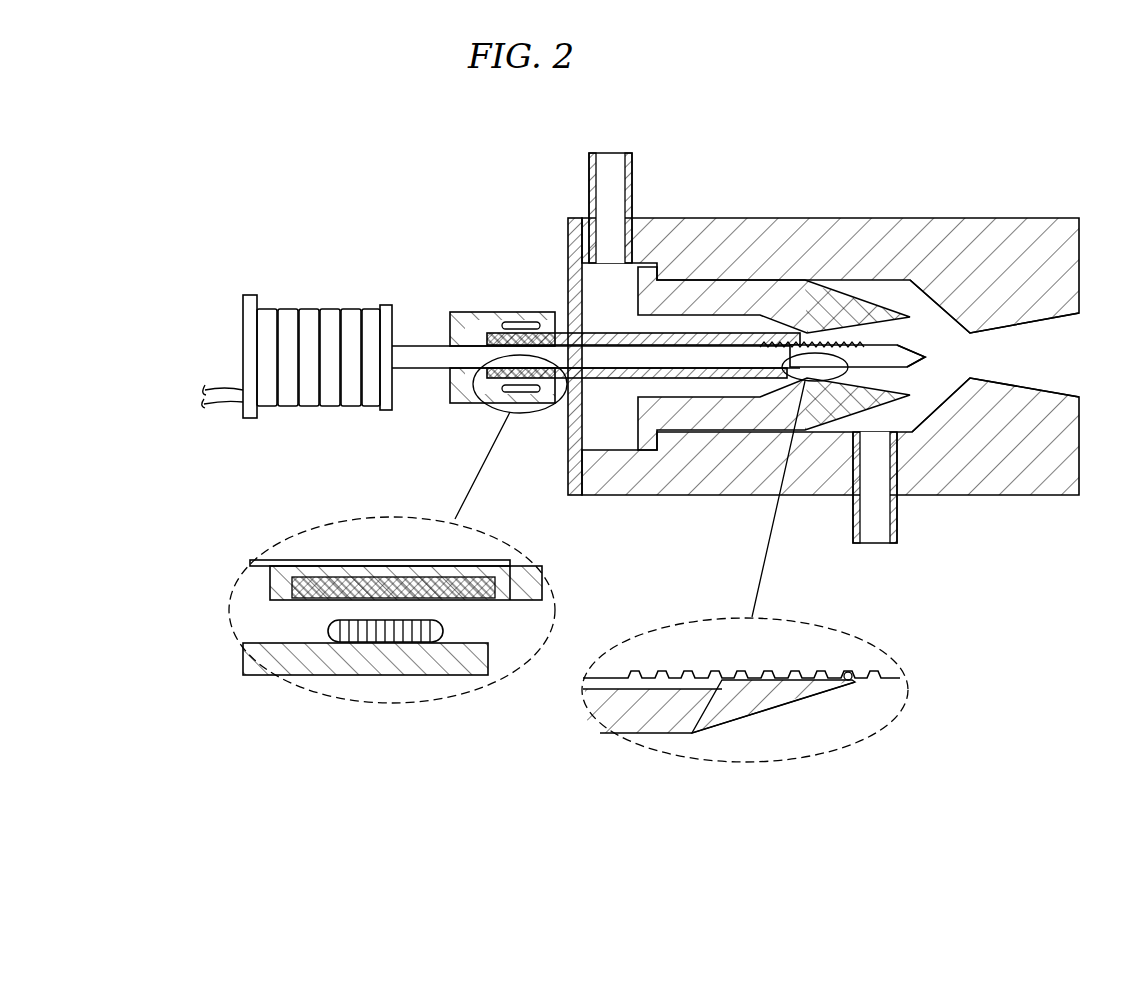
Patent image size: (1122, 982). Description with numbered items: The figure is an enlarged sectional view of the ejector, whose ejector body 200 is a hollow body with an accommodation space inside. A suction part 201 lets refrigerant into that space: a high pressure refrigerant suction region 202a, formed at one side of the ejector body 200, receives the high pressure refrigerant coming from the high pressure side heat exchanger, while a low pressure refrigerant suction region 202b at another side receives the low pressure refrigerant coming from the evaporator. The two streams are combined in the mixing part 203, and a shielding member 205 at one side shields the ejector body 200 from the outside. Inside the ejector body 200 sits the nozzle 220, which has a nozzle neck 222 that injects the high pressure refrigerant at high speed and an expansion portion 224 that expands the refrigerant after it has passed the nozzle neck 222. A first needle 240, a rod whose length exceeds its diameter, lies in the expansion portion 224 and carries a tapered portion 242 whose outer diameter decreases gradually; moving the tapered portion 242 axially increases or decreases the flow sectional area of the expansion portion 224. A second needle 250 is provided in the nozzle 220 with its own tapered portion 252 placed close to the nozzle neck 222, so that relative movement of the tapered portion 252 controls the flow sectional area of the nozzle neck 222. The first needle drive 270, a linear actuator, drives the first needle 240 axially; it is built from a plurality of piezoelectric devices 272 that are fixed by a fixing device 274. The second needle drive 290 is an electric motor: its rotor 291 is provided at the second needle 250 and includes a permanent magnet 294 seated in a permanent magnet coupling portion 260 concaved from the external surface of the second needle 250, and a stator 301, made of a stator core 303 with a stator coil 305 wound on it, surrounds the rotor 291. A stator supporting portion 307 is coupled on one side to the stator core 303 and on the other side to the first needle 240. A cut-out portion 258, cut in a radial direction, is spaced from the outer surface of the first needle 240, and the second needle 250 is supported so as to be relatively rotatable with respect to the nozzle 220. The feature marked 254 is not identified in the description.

The ejector body 200 is at (1021, 214).
The suction part 201 is at (784, 283).
The high pressure refrigerant suction region 202a is at (633, 187).
The low pressure refrigerant suction region 202b is at (898, 521).
The mixing part 203 is at (933, 338).
The shielding member 205 is at (572, 458).
The nozzle 220 is at (768, 292).
The nozzle neck 222 is at (835, 388).
The expansion portion 224 is at (868, 383).
The first needle 240 is at (411, 340).
The tapered portion 242 is at (929, 338).
The second needle 250 is at (556, 332).
The tapered portion 252 is at (816, 350).
The thread tip 254 is at (847, 686).
The cut-out portion 258 is at (300, 566).
The permanent magnet coupling portion 260 is at (313, 583).
The first needle drive 270 is at (297, 310).
The piezoelectric device 272 is at (324, 323).
The fixing device 274 is at (251, 295).
The second needle drive 290 is at (328, 736).
The rotor 291 is at (457, 608).
The permanent magnet 294 is at (336, 630).
The stator 301 is at (385, 716).
The stator core 303 is at (377, 634).
The stator coil 305 is at (413, 698).
The stator supporting portion 307 is at (455, 311).